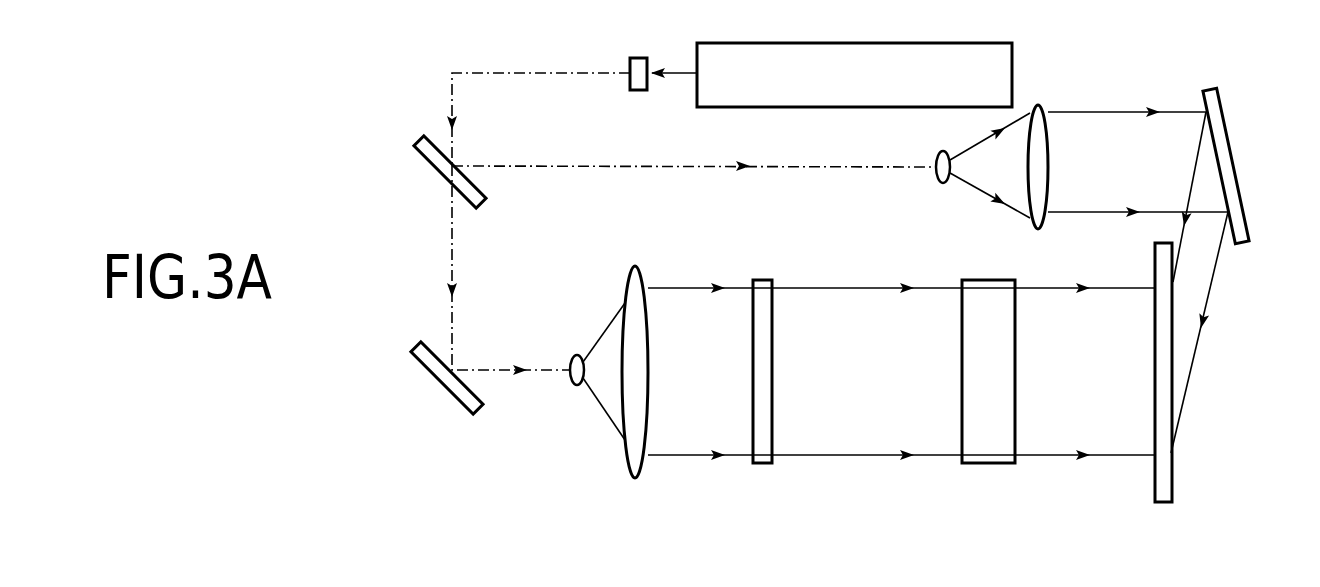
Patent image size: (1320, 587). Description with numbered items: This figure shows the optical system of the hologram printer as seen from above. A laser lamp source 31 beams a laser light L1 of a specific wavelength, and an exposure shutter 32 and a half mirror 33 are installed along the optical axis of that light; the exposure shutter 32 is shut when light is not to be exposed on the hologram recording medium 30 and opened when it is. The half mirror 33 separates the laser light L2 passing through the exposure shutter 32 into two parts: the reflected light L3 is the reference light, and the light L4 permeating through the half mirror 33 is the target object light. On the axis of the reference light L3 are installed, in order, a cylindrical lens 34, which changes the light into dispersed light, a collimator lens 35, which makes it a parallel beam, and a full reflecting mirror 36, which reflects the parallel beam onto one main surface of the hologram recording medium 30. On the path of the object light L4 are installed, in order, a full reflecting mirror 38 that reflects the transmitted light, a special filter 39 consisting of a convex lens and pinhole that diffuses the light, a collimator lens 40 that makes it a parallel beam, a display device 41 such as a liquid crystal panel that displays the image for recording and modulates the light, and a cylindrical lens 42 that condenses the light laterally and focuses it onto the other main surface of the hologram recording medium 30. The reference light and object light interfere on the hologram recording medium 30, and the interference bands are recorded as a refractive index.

The hologram recording medium 30 is at (1155, 257).
The laser lamp source 31 is at (747, 108).
The exposure shutter 32 is at (639, 92).
The half mirror 33 is at (431, 171).
The cylindrical lens 34 is at (937, 151).
The collimator lens 35 is at (1037, 104).
The full reflecting mirror 36 is at (1233, 130).
The full reflecting mirror 38 is at (422, 377).
The special filter 39 is at (574, 358).
The collimator lens 40 is at (639, 265).
The display device 41 is at (765, 279).
The cylindrical lens 42 is at (988, 279).
The laser light L1 is at (673, 76).
The laser light L2 is at (453, 102).
The reference light L3 is at (566, 168).
The target object light L4 is at (453, 242).